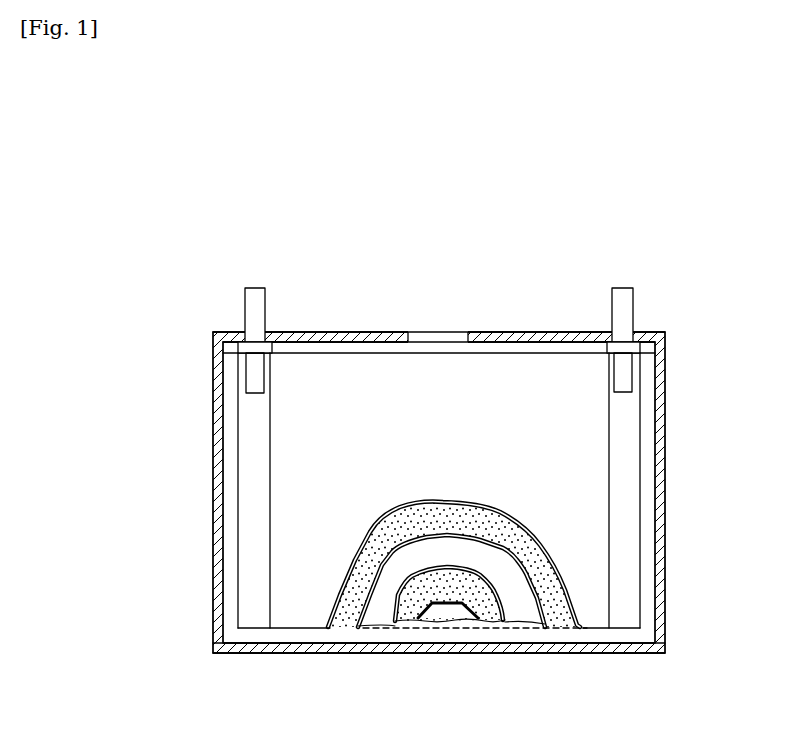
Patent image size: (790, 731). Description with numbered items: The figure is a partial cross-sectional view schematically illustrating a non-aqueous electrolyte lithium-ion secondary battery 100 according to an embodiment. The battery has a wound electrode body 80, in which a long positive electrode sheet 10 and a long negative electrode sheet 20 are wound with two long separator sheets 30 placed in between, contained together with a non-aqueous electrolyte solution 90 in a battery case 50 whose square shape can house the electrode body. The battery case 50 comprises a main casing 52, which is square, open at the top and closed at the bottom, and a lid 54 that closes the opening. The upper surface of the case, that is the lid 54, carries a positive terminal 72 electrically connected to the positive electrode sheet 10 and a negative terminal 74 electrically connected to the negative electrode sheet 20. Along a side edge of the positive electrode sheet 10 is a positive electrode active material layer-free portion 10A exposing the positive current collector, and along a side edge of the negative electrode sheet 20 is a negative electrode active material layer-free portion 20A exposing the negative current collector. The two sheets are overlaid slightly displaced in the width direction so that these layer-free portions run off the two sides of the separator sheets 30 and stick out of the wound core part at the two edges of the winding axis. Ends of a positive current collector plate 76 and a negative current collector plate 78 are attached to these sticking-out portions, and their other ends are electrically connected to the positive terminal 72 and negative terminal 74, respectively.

The lithium-ion secondary battery 100 is at (661, 231).
The positive electrode sheet 10 is at (383, 612).
The positive electrode active material layer-free portion 10A is at (250, 542).
The negative electrode sheet 20 is at (298, 610).
The negative electrode active material layer-free portion 20A is at (632, 560).
The separator sheet 30 is at (352, 612).
The battery case 50 is at (667, 491).
The main casing 52 is at (660, 610).
The lid 54 is at (345, 337).
The positive terminal 72 is at (255, 297).
The negative terminal 74 is at (621, 300).
The positive current collector plate 76 is at (252, 385).
The negative current collector plate 78 is at (623, 383).
The wound electrode body 80 is at (589, 631).
The non-aqueous electrolyte solution 90 is at (472, 635).